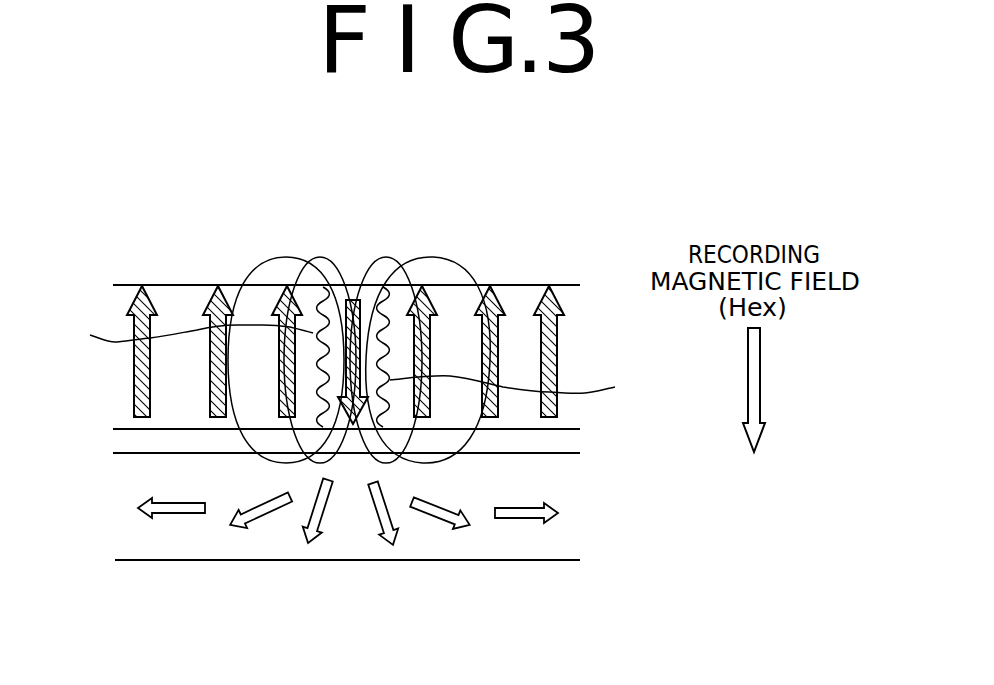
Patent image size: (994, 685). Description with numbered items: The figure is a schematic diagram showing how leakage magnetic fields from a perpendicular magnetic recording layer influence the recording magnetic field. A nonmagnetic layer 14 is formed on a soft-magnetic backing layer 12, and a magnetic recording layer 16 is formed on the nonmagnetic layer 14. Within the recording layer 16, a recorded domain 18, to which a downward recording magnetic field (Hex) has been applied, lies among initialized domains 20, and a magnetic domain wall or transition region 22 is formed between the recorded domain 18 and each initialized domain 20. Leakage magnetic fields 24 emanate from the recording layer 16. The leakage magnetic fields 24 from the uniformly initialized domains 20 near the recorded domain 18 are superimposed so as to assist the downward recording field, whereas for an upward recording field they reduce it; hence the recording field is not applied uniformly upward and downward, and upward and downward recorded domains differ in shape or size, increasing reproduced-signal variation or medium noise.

The soft-magnetic backing layer 12 is at (352, 545).
The nonmagnetic layer 14 is at (565, 443).
The magnetic recording layer 16 is at (578, 331).
The recorded domain 18 is at (352, 298).
The initialized domains 20 is at (268, 293).
The magnetic domain wall or transition region 22 is at (352, 362).
The leakage magnetic fields 24 is at (247, 283).